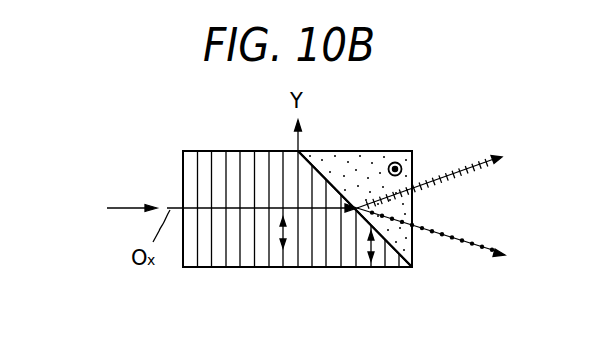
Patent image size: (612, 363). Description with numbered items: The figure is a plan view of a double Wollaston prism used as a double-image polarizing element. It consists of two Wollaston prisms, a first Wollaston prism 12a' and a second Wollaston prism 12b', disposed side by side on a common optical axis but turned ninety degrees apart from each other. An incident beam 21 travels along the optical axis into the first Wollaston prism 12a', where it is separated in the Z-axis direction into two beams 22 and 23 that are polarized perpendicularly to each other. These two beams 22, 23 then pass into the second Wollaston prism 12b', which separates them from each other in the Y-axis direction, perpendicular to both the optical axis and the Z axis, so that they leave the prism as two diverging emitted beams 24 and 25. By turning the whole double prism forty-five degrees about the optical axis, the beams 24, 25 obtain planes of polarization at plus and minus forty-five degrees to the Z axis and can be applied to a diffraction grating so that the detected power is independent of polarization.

The first Wollaston prism 12a' is at (297, 177).
The second Wollaston prism 12b' is at (355, 175).
The incident beam 21 is at (118, 205).
The polarized beam 22 is at (322, 208).
The polarized beam 23 is at (355, 290).
The emitted beam 24 is at (447, 232).
The emitted beam 25 is at (473, 165).